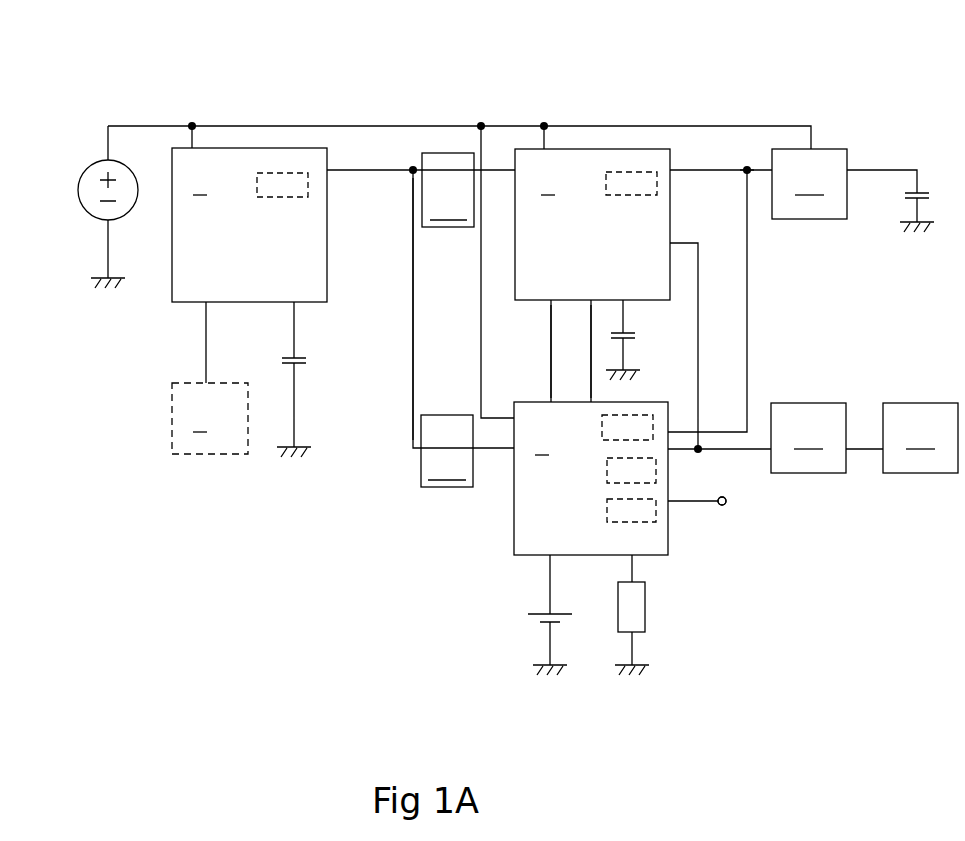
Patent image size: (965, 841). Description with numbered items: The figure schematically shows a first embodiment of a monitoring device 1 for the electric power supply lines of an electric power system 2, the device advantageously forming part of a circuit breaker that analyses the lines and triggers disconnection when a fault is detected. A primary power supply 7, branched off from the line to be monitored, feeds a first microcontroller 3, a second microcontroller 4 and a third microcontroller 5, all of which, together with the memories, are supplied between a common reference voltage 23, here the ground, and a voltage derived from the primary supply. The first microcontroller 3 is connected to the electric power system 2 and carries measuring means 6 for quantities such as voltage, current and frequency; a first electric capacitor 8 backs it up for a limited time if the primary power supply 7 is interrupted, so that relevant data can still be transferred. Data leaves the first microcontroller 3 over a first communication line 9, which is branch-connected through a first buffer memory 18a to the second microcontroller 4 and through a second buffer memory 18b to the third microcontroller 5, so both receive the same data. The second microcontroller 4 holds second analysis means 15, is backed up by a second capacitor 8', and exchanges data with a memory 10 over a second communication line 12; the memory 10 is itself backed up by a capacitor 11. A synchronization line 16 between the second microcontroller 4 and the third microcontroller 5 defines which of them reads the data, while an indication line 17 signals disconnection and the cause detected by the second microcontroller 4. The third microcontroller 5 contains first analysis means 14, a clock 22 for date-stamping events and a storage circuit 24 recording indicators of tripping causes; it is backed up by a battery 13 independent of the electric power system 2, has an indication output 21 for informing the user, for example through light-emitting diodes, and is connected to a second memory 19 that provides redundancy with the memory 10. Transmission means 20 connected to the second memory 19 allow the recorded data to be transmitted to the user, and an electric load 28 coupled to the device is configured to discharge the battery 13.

The monitoring device 1 is at (76, 120).
The electric power system 2 is at (210, 418).
The first microcontroller 3 is at (249, 225).
The second microcontroller 4 is at (592, 224).
The third microcontroller 5 is at (591, 478).
The measuring means 6 is at (262, 172).
The primary power supply 7 is at (78, 190).
The first electric capacitor 8 is at (308, 379).
The second capacitor 8' is at (650, 356).
The first communication line 9 is at (415, 278).
The memory 10 is at (809, 184).
The capacitor 11 is at (926, 197).
The second communication line 12 is at (737, 168).
The battery 13 is at (549, 610).
The first analysis means 14 is at (628, 484).
The second analysis means 15 is at (614, 172).
The synchronization line 16 is at (549, 338).
The indication line 17 is at (590, 345).
The first buffer memory 18a is at (448, 190).
The second buffer memory 18b is at (447, 451).
The second memory 19 is at (808, 438).
The transmission means 20 is at (920, 438).
The indication output 21 is at (726, 499).
The clock 22 is at (632, 523).
The reference voltage 23 is at (92, 278).
The storage circuit 24 is at (618, 440).
The electric load 28 is at (646, 605).